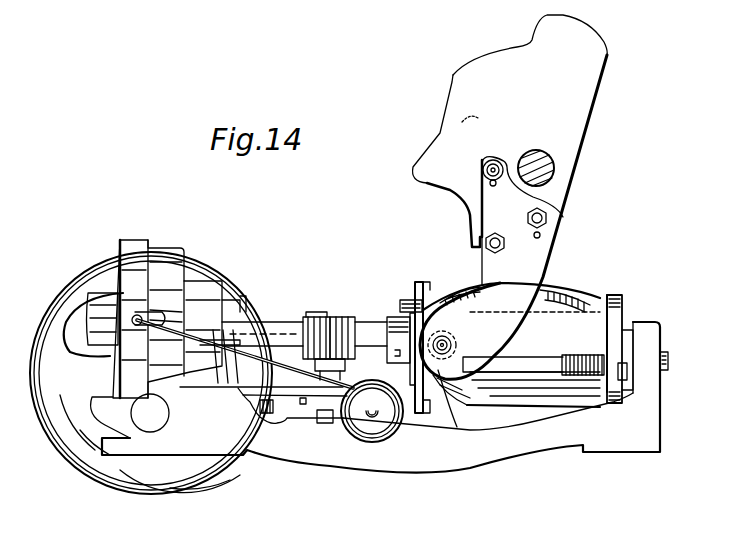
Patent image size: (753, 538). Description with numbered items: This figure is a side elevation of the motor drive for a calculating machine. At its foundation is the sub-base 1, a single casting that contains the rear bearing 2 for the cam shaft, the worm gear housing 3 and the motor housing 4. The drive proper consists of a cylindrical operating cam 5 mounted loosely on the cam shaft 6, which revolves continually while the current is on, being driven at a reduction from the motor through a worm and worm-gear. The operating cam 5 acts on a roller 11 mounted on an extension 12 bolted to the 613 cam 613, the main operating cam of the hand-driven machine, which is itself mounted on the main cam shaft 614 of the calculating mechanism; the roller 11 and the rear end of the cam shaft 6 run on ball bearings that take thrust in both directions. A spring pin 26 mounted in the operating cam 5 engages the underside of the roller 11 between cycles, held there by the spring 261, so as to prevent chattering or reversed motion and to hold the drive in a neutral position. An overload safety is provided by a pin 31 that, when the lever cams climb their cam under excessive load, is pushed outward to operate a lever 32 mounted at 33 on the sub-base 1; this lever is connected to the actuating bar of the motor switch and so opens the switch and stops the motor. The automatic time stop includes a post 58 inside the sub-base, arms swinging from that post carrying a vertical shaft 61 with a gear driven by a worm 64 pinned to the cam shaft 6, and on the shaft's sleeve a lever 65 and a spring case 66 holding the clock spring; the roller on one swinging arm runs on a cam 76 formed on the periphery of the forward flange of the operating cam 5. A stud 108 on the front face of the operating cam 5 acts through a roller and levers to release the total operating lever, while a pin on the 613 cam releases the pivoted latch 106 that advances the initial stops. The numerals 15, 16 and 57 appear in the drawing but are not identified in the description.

The sub-base 1 is at (643, 423).
The rear bearing 2 is at (668, 352).
The worm gear housing 3 is at (170, 268).
The motor housing 4 is at (67, 377).
The cylindrical operating cam 5 is at (578, 317).
The cam shaft 6 is at (273, 322).
The roller 11 is at (460, 342).
The extension 12 is at (533, 255).
The lower housing portion 15 is at (467, 403).
The bearing cap 16 is at (630, 333).
The spring pin 26 is at (535, 363).
The spring 261 is at (582, 380).
The pin 31 is at (136, 316).
The lever 32 is at (193, 324).
The lever mounting 33 is at (233, 303).
The pulley 57 is at (360, 437).
The post 58 is at (253, 370).
The vertical shaft 61 is at (328, 313).
The worm 64 is at (358, 299).
The lever 65 is at (340, 380).
The spring case 66 is at (295, 395).
The cam 76 is at (413, 407).
The pivoted latch 106 is at (436, 146).
The stud 108 is at (403, 300).
The 613 cam 613 is at (577, 43).
The main cam shaft 614 is at (532, 158).